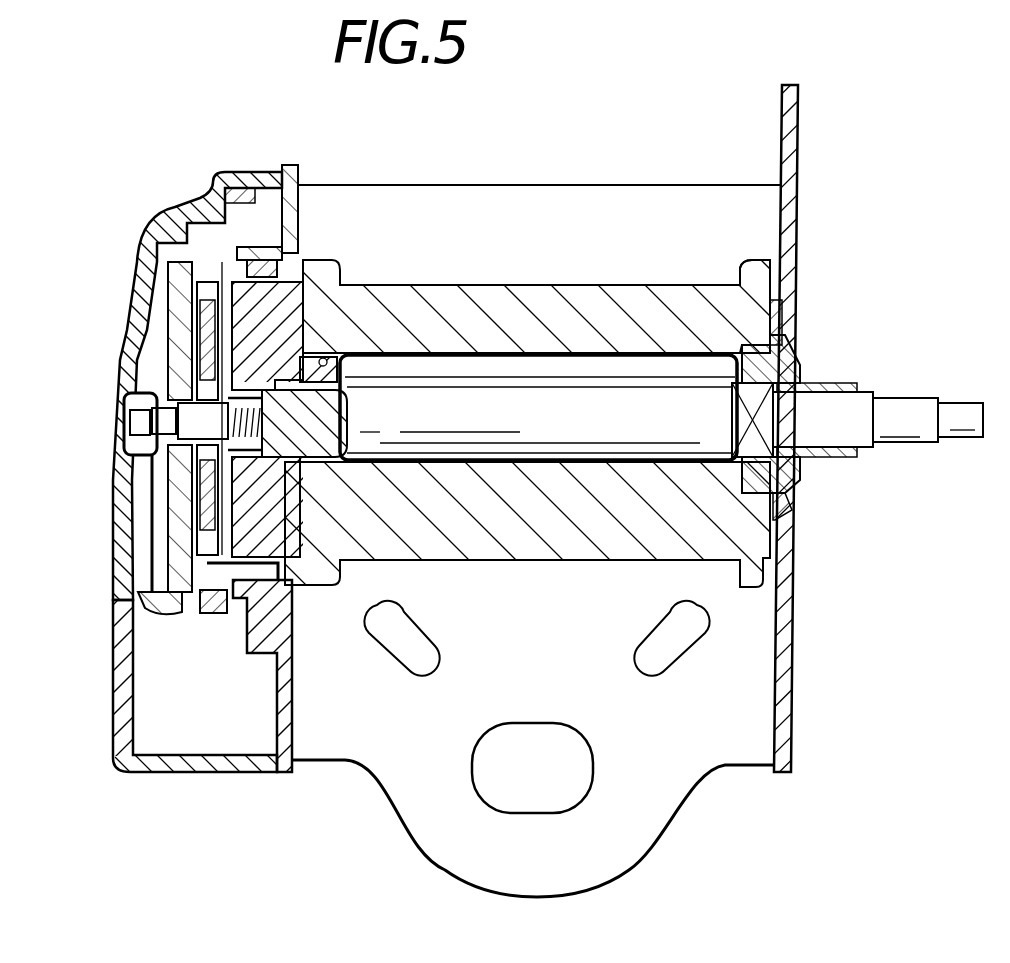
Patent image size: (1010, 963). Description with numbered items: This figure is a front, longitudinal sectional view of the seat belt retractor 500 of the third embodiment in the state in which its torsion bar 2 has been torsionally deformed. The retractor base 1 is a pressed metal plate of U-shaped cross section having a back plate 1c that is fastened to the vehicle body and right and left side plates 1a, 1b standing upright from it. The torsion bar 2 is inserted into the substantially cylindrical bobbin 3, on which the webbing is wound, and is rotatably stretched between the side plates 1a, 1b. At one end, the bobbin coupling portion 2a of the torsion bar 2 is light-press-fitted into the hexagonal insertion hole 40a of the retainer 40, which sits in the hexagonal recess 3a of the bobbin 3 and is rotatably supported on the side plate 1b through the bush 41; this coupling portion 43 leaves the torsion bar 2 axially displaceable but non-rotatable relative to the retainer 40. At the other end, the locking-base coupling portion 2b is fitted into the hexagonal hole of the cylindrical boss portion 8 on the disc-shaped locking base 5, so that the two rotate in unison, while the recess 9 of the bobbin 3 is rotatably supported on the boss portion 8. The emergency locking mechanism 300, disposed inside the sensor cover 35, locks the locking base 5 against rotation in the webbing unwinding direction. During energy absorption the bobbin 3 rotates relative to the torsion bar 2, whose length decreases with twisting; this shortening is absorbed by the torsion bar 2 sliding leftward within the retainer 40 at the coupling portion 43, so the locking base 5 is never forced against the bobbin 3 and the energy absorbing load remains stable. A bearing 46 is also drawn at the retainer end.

The retractor base 1 is at (580, 202).
The side plate 1a is at (292, 710).
The side plate 1b is at (795, 665).
The back plate 1c is at (632, 840).
The torsion bar 2 is at (515, 410).
The bobbin coupling portion 2a is at (730, 420).
The locking-base coupling portion 2b is at (310, 420).
The bobbin 3 is at (592, 302).
The recess 3a is at (772, 300).
The locking base 5 is at (258, 330).
The boss portion 8 is at (312, 358).
The recess 9 is at (322, 352).
The sensor cover 35 is at (150, 262).
The retainer 40 is at (806, 368).
The insertion hole 40a is at (796, 482).
The bush 41 is at (782, 340).
The coupling portion 43 is at (792, 508).
The front bearing 46 is at (790, 437).
The emergency locking mechanism 300 is at (178, 208).
The seat belt retractor 500 is at (530, 183).